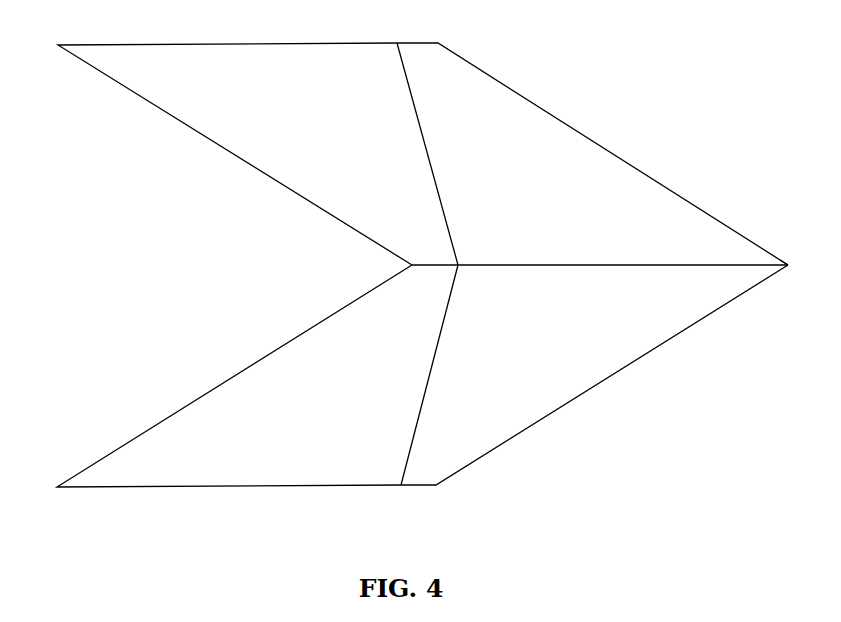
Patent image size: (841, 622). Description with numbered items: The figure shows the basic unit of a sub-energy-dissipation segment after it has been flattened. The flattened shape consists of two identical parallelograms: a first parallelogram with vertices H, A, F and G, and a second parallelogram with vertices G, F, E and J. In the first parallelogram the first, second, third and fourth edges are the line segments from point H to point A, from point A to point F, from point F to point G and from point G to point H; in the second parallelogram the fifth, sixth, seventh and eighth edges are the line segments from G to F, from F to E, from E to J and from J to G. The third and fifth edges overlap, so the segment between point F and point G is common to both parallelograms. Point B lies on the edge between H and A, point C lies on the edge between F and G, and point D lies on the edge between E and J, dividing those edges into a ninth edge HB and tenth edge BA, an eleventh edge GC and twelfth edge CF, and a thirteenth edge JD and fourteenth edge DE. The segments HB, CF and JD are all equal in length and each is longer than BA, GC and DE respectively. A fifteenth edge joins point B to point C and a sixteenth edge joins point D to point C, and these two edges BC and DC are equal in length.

The point A is at (592, 142).
The point B is at (419, 142).
The point C is at (623, 255).
The point D is at (419, 389).
The point E is at (594, 389).
The point F is at (794, 255).
The point G is at (415, 265).
The point H is at (220, 152).
The point J is at (225, 380).